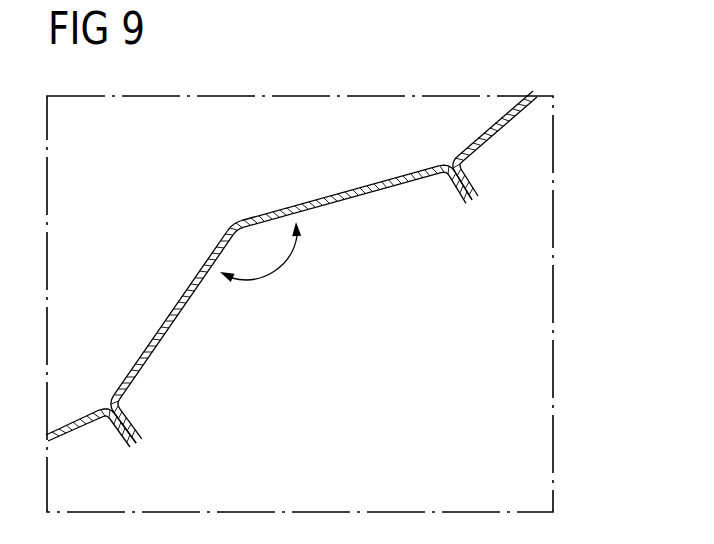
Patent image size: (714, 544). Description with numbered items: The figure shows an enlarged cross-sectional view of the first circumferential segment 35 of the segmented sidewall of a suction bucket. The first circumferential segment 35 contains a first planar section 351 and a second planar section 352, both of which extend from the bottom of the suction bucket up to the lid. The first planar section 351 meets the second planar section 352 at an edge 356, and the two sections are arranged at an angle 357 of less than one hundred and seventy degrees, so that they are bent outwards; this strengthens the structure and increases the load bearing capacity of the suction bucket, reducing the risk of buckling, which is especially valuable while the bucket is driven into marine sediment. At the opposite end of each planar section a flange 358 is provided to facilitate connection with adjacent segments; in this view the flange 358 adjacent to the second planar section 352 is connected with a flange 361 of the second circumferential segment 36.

The first circumferential segment 35 is at (283, 176).
The second circumferential segment 36 is at (464, 117).
The first planar section 351 is at (170, 313).
The second planar section 352 is at (338, 186).
The edge 356 is at (243, 222).
The angle 357 is at (277, 271).
The flange 358 is at (142, 421).
The flange of the second circumferential segment 361 is at (477, 182).